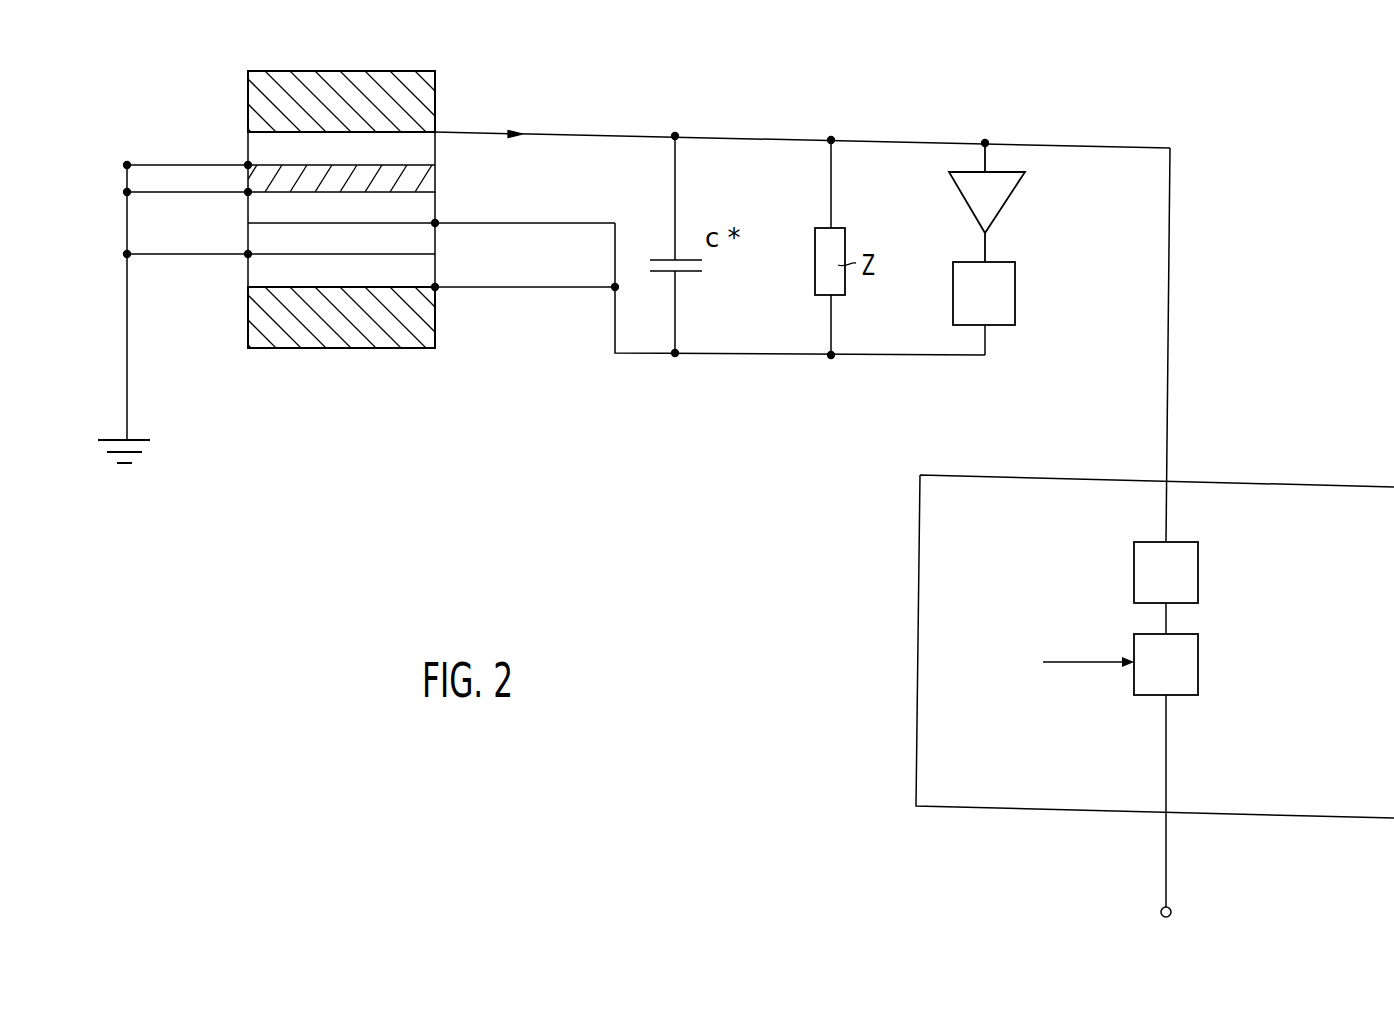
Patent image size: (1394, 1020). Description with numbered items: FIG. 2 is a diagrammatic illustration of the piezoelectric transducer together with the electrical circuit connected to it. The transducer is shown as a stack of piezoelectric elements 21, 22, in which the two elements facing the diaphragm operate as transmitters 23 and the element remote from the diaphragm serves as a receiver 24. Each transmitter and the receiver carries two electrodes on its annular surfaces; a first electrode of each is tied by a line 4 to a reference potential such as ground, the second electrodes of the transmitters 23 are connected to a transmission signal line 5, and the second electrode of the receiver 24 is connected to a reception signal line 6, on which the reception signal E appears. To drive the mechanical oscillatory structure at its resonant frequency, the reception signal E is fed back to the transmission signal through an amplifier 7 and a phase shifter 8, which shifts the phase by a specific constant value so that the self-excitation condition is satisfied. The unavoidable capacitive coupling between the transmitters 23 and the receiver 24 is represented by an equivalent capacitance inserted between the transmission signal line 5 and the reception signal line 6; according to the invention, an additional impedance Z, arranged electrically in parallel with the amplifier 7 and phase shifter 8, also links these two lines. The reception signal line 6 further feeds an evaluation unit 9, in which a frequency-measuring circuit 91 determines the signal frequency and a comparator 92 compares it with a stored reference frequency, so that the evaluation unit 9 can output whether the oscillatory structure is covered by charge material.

The line 4 is at (127, 225).
The transmission signal line 5 is at (637, 355).
The reception signal line 6 is at (605, 133).
The amplifier 7 is at (1000, 197).
The phase shifter 8 is at (1008, 318).
The evaluation unit 9 is at (1128, 532).
The piezoelectric element 21 is at (273, 320).
The piezoelectric element 22 is at (273, 92).
The transmitters 23 is at (400, 273).
The receiver 24 is at (265, 143).
The frequency-measuring circuit 91 is at (1200, 573).
The comparator 92 is at (1200, 660).